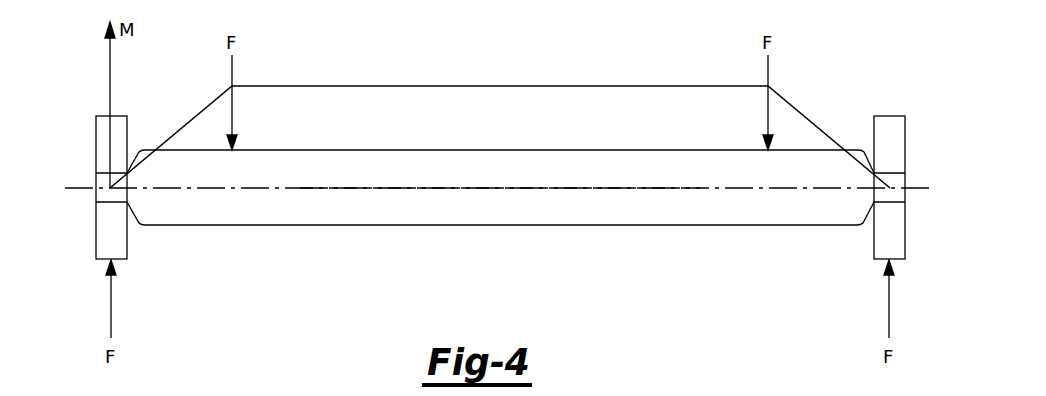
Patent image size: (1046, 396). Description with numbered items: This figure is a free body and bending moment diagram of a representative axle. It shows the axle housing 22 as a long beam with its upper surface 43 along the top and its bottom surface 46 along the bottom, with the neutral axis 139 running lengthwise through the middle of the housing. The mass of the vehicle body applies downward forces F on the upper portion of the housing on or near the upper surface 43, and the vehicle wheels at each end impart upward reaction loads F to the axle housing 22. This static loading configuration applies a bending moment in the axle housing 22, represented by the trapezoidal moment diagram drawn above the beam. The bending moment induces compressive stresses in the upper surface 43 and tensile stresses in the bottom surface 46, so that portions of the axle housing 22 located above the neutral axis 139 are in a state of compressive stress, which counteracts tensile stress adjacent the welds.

The axle housing 22 is at (500, 205).
The upper surface 43 is at (378, 148).
The bottom surface 46 is at (548, 226).
The neutral axis 139 is at (500, 189).